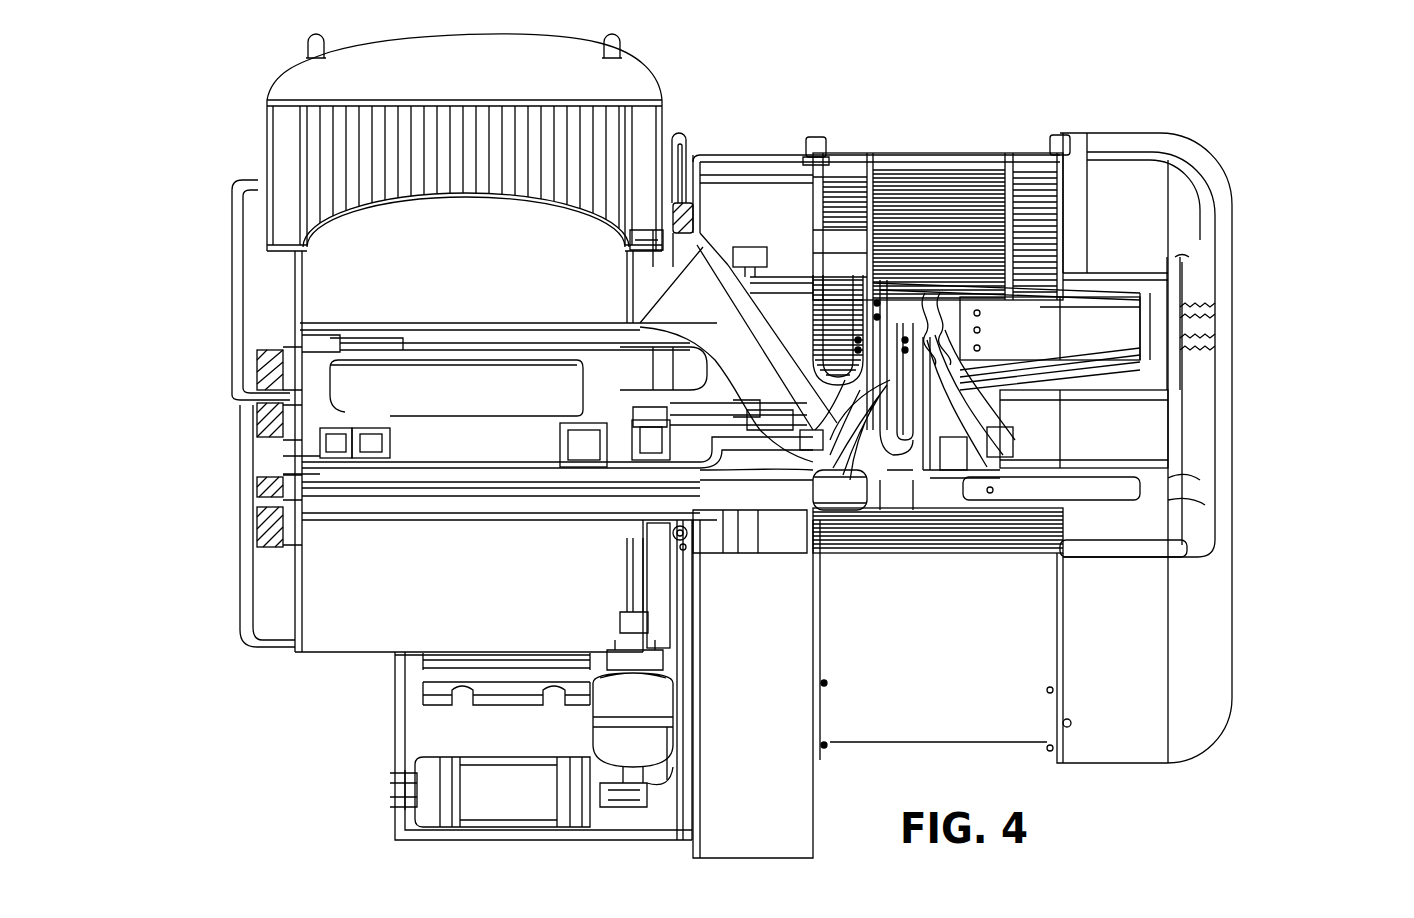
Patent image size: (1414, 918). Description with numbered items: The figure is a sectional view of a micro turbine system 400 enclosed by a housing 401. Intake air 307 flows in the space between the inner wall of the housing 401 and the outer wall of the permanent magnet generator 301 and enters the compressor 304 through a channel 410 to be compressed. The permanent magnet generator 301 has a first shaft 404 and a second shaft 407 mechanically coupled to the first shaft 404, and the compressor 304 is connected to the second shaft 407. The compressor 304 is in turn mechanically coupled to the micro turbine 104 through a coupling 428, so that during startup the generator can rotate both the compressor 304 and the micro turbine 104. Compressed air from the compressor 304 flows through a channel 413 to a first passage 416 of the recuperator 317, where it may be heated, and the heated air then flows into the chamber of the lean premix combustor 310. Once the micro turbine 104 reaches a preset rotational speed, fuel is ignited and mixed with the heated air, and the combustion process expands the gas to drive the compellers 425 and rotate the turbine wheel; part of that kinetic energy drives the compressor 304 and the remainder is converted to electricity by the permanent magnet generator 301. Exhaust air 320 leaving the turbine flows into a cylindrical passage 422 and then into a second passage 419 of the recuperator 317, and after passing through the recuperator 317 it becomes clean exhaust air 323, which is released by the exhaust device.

The micro turbine system 400 is at (173, 63).
The intake air 307 is at (423, 248).
The housing 401 is at (262, 645).
The permanent magnet generator 301 is at (460, 428).
The first shaft 404 is at (423, 443).
The second shaft 407 is at (703, 443).
The channel 410 is at (695, 305).
The clean exhaust air 323 is at (732, 217).
The recuperator 317 is at (1040, 190).
The first passage 416 is at (955, 248).
The second passage 419 is at (988, 232).
The channel 413 is at (877, 347).
The compressor 304 is at (815, 440).
The compellers 425 is at (853, 427).
The coupling 428 is at (900, 440).
The micro turbine 104 is at (937, 447).
The lean premix combustor 310 is at (1060, 333).
The cylindrical passage 422 is at (1110, 407).
The exhaust air 320 is at (1173, 440).